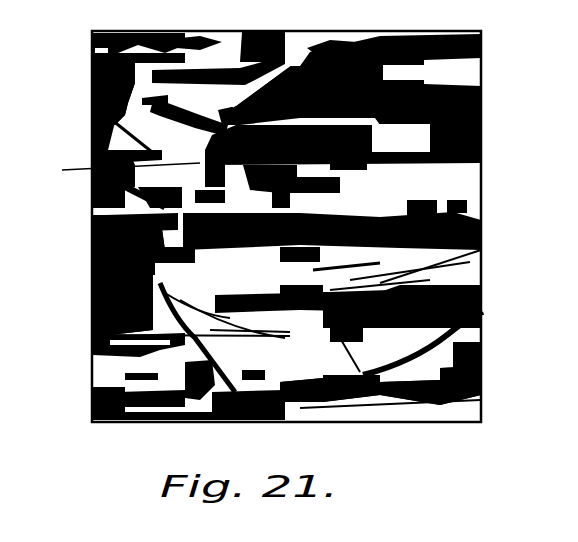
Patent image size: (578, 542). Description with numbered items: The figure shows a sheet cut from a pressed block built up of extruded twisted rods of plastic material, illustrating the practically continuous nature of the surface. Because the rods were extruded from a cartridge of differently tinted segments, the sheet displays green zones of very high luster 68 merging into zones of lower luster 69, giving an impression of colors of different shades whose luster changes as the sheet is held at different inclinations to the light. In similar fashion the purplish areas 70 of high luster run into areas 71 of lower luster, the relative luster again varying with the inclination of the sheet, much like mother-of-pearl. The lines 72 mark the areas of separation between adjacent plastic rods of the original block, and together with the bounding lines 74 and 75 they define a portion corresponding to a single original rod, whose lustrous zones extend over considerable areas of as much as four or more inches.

The green zones of very high luster 68 is at (93, 163).
The zones of lower luster 69 is at (93, 200).
The purplish areas of high luster 70 is at (125, 296).
The areas of lower luster 71 is at (92, 343).
The lines 72 is at (294, 330).
The bounding line 74 is at (93, 264).
The bounding line 75 is at (407, 207).